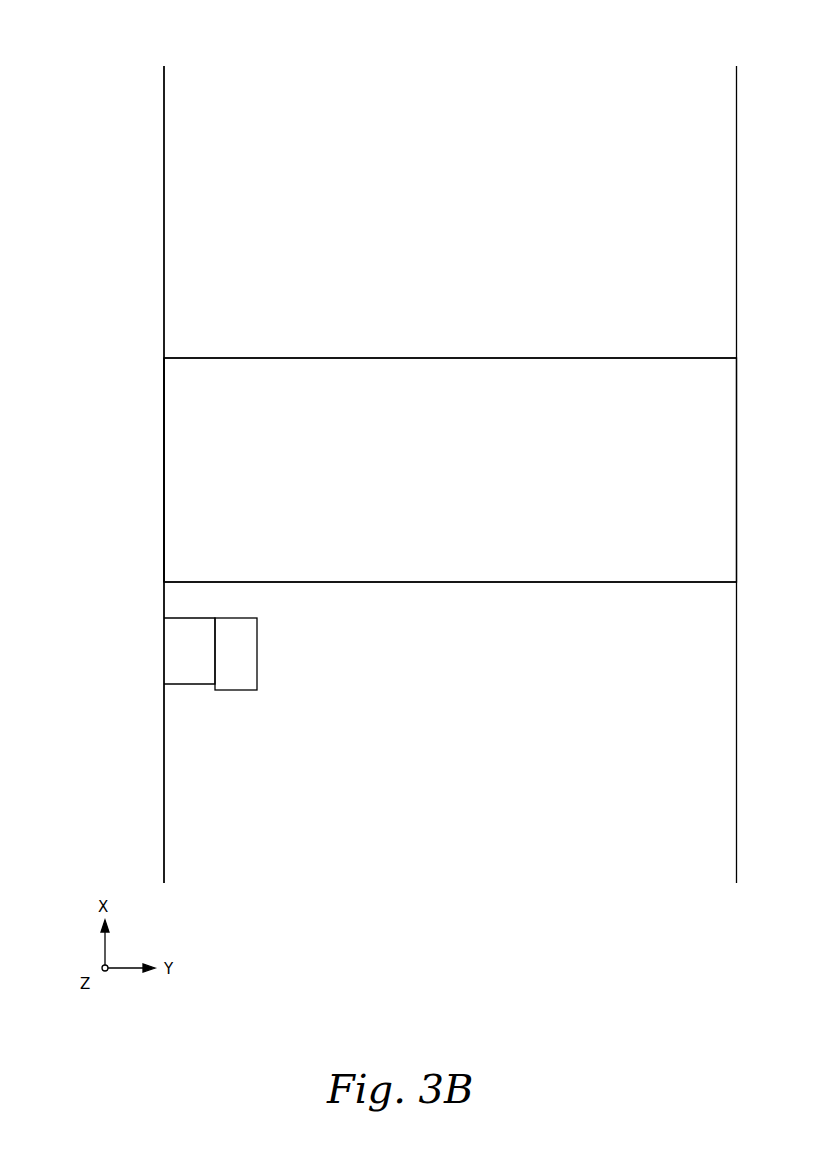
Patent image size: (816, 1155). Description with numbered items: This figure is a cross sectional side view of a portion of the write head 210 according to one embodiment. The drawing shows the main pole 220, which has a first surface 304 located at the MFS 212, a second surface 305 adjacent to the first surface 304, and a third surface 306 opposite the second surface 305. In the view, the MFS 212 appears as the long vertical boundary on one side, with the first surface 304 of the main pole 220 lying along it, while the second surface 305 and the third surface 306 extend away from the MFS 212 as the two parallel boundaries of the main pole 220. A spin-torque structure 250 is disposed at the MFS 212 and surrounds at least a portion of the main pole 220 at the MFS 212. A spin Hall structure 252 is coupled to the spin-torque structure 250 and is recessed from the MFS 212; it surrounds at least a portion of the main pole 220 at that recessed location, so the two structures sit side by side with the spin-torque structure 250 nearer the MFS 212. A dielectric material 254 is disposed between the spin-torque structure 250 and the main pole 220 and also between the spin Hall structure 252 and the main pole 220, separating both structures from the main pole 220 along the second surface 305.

The write head 210 is at (117, 46).
The MFS 212 is at (163, 158).
The main pole 220 is at (452, 480).
The spin-torque structure 250 is at (170, 652).
The spin Hall structure 252 is at (250, 651).
The dielectric material 254 is at (238, 601).
The first surface 304 is at (163, 471).
The second surface 305 is at (232, 580).
The third surface 306 is at (231, 359).